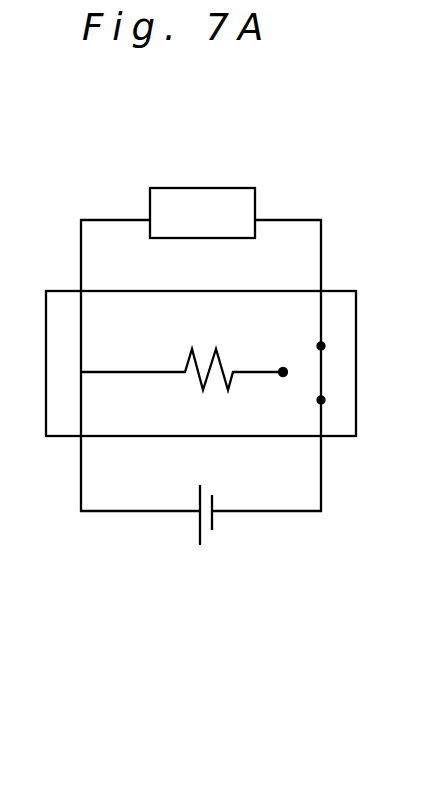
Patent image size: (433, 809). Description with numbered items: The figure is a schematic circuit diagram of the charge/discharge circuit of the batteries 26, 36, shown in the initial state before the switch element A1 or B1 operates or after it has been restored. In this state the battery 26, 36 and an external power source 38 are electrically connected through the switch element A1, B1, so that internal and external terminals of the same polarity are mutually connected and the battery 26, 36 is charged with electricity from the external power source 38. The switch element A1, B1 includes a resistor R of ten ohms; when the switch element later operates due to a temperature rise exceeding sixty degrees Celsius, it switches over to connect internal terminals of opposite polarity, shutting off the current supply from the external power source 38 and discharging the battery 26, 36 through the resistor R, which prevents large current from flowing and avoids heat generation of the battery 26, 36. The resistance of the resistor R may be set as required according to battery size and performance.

The external power source 38 is at (258, 176).
The switch element A1 is at (187, 422).
The switch element B1 is at (46, 440).
The resistor R is at (184, 353).
The battery 26 is at (249, 574).
The battery 36 is at (210, 557).